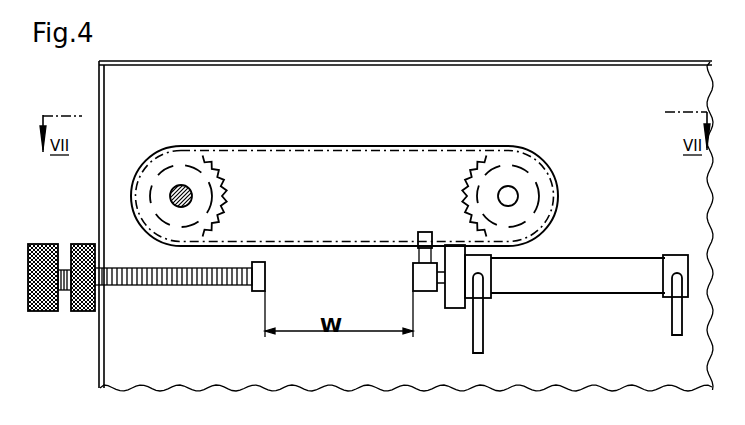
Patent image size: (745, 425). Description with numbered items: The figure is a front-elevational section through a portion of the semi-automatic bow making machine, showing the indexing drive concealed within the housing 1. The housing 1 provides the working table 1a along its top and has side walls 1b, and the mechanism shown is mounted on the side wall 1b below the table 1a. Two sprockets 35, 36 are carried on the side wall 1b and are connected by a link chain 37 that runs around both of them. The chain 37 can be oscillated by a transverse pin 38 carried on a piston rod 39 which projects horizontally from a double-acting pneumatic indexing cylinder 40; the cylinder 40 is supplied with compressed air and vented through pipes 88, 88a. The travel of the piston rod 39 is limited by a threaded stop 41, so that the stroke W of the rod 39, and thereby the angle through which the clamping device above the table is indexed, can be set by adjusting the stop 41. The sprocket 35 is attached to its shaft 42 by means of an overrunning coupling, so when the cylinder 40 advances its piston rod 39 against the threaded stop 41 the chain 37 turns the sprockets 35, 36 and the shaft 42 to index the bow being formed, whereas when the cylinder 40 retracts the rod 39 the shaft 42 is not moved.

The housing 1 is at (100, 365).
The working table 1a is at (496, 61).
The side wall 1b is at (190, 88).
The sprocket 35 is at (166, 160).
The sprocket 36 is at (545, 179).
The link chain 37 is at (330, 148).
The transverse pin 38 is at (417, 232).
The piston rod 39 is at (442, 283).
The double-acting pneumatic indexing cylinder 40 is at (618, 285).
The threaded stop 41 is at (163, 283).
The shaft 42 is at (176, 193).
The pipe 88 is at (675, 316).
The pipe 88a is at (484, 331).